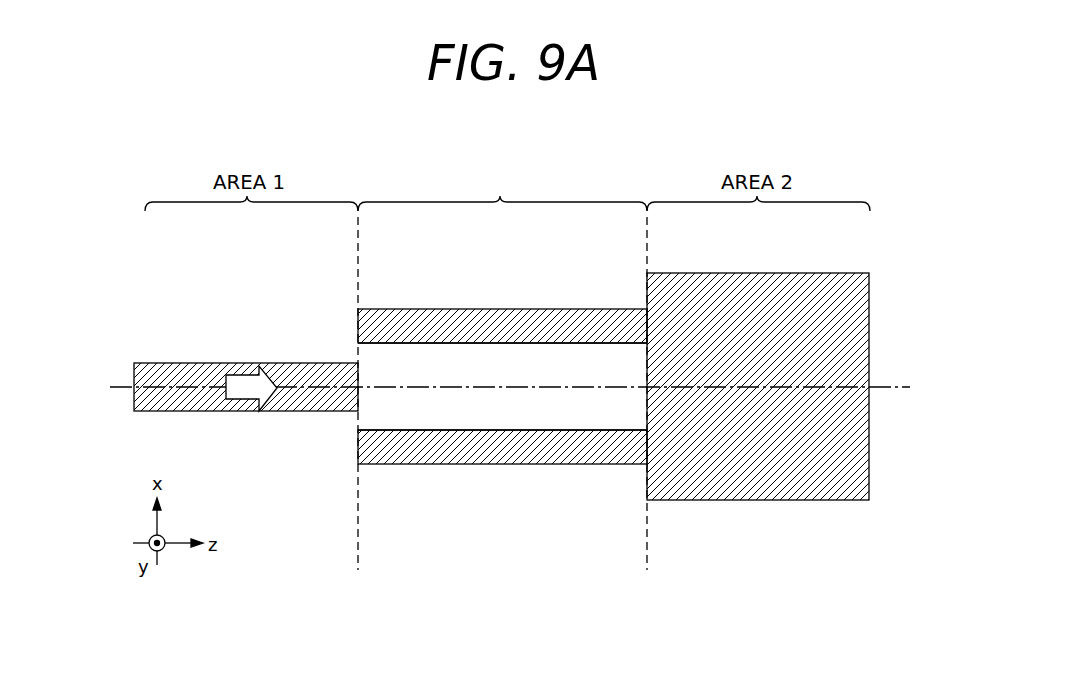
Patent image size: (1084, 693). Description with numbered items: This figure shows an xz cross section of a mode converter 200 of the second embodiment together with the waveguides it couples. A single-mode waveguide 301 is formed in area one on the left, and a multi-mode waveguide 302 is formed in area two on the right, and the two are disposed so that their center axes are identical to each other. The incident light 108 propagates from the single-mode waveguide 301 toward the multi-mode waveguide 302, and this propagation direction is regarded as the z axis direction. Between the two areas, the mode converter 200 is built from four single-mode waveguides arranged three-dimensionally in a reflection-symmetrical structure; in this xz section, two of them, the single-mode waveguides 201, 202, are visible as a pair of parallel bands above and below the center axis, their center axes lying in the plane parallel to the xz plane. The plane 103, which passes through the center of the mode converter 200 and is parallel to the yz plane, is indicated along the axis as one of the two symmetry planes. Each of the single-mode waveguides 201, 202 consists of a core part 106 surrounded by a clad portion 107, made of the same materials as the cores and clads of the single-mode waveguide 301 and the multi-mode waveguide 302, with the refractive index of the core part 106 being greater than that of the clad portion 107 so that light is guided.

The mode converter 200 is at (500, 193).
The single-mode waveguide 201 is at (478, 309).
The single-mode waveguide 202 is at (476, 465).
The core part 106 is at (455, 440).
The clad portion 107 is at (390, 516).
The incident light 108 is at (241, 392).
The single-mode waveguide 301 is at (192, 362).
The multi-mode waveguide 302 is at (778, 273).
The plane 103 is at (882, 388).